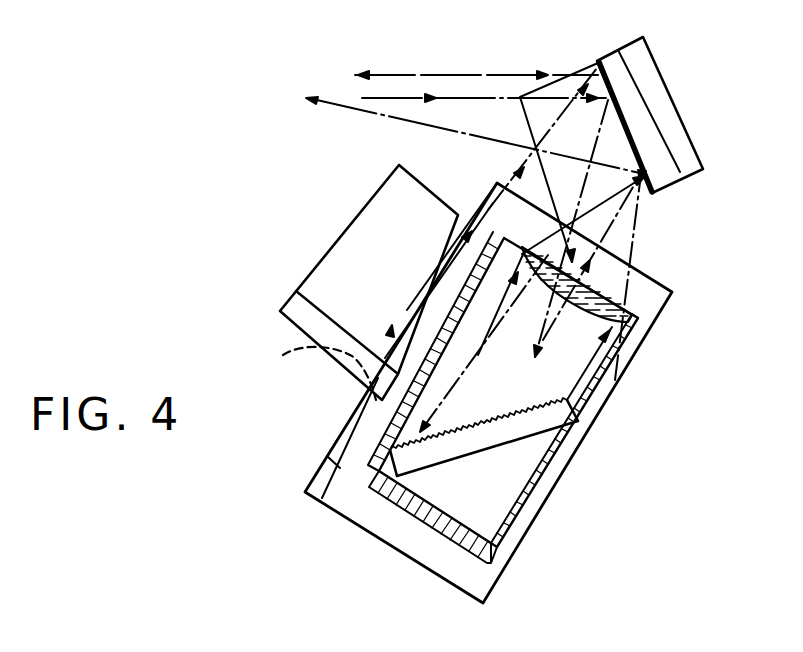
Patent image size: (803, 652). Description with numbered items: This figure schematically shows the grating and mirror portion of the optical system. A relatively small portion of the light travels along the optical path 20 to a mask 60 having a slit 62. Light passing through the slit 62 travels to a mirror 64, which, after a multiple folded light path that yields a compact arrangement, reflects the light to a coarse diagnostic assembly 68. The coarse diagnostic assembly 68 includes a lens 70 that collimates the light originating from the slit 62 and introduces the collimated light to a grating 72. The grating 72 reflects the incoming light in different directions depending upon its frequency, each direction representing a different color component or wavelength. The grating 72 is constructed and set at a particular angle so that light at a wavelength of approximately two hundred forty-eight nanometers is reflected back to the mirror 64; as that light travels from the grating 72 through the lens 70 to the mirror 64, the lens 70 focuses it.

The optical path 20 is at (320, 432).
The mask 60 is at (297, 303).
The slit 62 is at (308, 371).
The mirror 64 is at (617, 126).
The coarse diagnostic assembly 68 is at (600, 431).
The lens 70 is at (668, 292).
The grating 72 is at (476, 440).